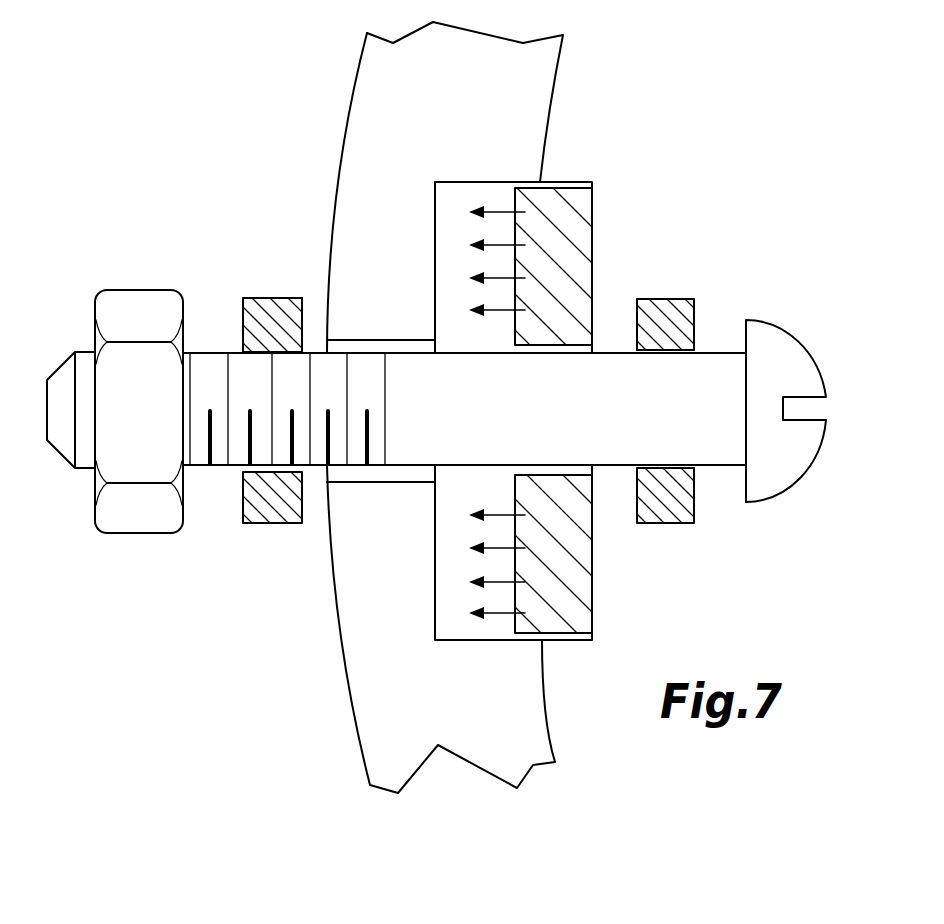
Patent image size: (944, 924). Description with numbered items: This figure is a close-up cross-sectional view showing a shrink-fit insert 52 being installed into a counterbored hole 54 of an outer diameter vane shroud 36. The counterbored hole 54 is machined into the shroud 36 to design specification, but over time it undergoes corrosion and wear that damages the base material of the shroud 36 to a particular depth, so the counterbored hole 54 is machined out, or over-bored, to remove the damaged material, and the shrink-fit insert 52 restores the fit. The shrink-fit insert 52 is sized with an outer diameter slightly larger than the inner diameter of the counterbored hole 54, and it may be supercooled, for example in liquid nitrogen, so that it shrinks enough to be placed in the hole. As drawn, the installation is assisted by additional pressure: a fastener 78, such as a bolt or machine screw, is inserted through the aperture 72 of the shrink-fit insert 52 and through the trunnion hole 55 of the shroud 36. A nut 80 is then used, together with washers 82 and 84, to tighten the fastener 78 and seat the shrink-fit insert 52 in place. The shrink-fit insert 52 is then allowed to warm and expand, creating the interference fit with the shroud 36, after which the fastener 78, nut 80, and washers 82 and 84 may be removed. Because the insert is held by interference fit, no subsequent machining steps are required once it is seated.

The outer diameter vane shroud 36 is at (365, 111).
The shrink-fit insert 52 is at (575, 190).
The counterbored hole 54 is at (450, 622).
The trunnion hole 55 is at (343, 348).
The aperture 72 is at (580, 345).
The fastener 78 is at (770, 327).
The nut 80 is at (147, 513).
The washer 82 is at (675, 523).
The washer 84 is at (270, 523).